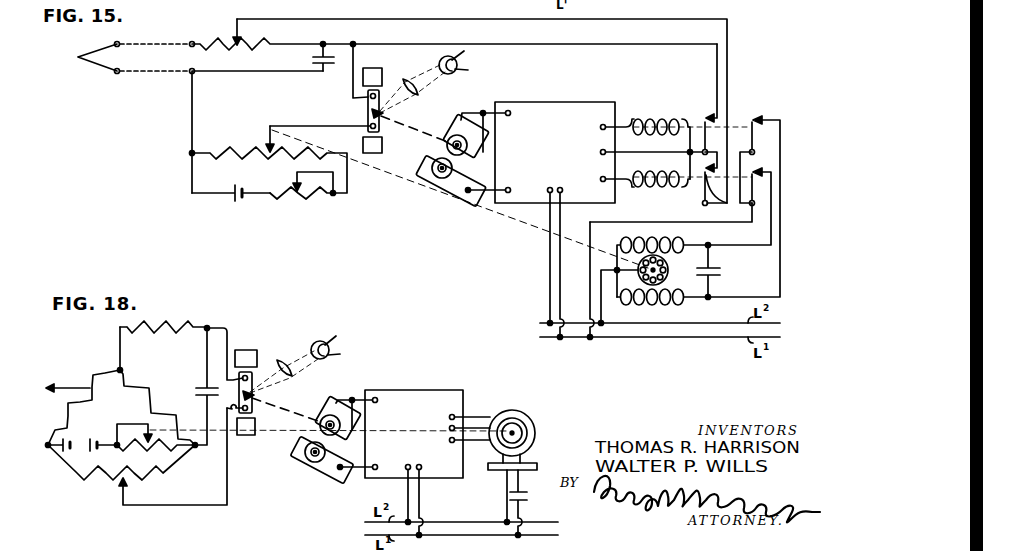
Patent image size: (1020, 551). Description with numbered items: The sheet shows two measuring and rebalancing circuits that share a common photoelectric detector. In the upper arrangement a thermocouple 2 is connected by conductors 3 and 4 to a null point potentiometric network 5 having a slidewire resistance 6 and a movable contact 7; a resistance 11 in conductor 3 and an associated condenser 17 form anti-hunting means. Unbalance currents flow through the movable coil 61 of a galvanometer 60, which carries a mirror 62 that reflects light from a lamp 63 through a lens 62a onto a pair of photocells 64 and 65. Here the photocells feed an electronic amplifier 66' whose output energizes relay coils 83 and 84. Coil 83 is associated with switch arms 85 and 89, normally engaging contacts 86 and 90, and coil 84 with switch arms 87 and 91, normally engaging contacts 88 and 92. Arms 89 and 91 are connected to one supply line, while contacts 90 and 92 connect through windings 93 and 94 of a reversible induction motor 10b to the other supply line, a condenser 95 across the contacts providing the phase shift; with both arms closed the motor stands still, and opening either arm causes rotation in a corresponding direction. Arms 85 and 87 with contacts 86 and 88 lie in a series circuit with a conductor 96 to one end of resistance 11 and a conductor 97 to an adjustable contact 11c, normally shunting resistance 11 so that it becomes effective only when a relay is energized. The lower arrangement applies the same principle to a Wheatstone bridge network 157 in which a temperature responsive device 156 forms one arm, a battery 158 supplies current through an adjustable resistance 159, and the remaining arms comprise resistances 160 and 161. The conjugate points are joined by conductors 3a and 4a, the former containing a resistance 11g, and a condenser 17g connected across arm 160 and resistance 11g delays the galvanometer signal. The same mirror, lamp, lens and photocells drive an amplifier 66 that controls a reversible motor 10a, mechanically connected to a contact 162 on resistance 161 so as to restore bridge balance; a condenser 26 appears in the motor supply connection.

In FIG. 15, the thermocouple 2 is at (90, 51).
In FIG. 15, the conductor 3 is at (144, 40).
In FIG. 15, the conductor 4 is at (146, 76).
In FIG. 15, the resistance 11 is at (221, 40).
In FIG. 15, the contact 11c is at (240, 37).
In FIG. 15, the condenser 17 is at (310, 60).
In FIG. 15, the slidewire resistance 6 is at (222, 145).
In FIG. 15, the contact 7 is at (267, 143).
In FIG. 15, the null point potentiometric network 5 is at (286, 181).
In FIG. 15, the galvanometer 60 is at (376, 70).
In FIG. 18, the galvanometer 60 is at (239, 353).
In FIG. 15, the movable coil 61 is at (365, 99).
In FIG. 18, the movable coil 61 is at (254, 397).
In FIG. 15, the mirror 62 is at (364, 121).
In FIG. 18, the mirror 62 is at (221, 329).
In FIG. 15, the lens 62a is at (424, 93).
In FIG. 18, the lens 62a is at (276, 358).
In FIG. 15, the lamp 63 is at (461, 70).
In FIG. 18, the lamp 63 is at (331, 354).
In FIG. 15, the photocell 64 is at (462, 108).
In FIG. 18, the photocell 64 is at (337, 403).
In FIG. 15, the photocell 65 is at (430, 191).
In FIG. 18, the photocell 65 is at (308, 466).
In FIG. 15, the electronic amplifier 66' is at (555, 144).
In FIG. 18, the electronic amplifier 66 is at (414, 425).
In FIG. 15, the coil 83 is at (654, 113).
In FIG. 15, the coil 84 is at (648, 188).
In FIG. 15, the switch arm 85 is at (701, 117).
In FIG. 15, the contact 86 is at (713, 110).
In FIG. 15, the switch arm 87 is at (702, 178).
In FIG. 15, the contact 88 is at (712, 203).
In FIG. 15, the switch arm 89 is at (750, 119).
In FIG. 15, the contact 90 is at (759, 116).
In FIG. 15, the switch arm 91 is at (760, 178).
In FIG. 15, the contact 92 is at (761, 170).
In FIG. 15, the winding 93 is at (677, 235).
In FIG. 15, the winding 94 is at (679, 299).
In FIG. 15, the condenser 95 is at (720, 272).
In FIG. 15, the conductor 96 is at (605, 45).
In FIG. 15, the conductor 97 is at (605, 20).
In FIG. 15, the motor 10b is at (640, 274).
In FIG. 18, the reversible motor 10a is at (531, 414).
In FIG. 18, the condenser 26 is at (527, 497).
In FIG. 18, the conductor 3a is at (119, 343).
In FIG. 18, the conductor 4a is at (183, 505).
In FIG. 18, the resistance 11g is at (174, 329).
In FIG. 18, the condenser 17g is at (199, 385).
In FIG. 18, the device 156 is at (67, 383).
In FIG. 18, the Wheatstone bridge network 157 is at (96, 417).
In FIG. 18, the battery 158 is at (82, 434).
In FIG. 18, the adjustable resistance 159 is at (149, 450).
In FIG. 18, the resistance 160 is at (173, 392).
In FIG. 18, the resistance 161 is at (104, 482).
In FIG. 18, the contact 162 is at (129, 484).